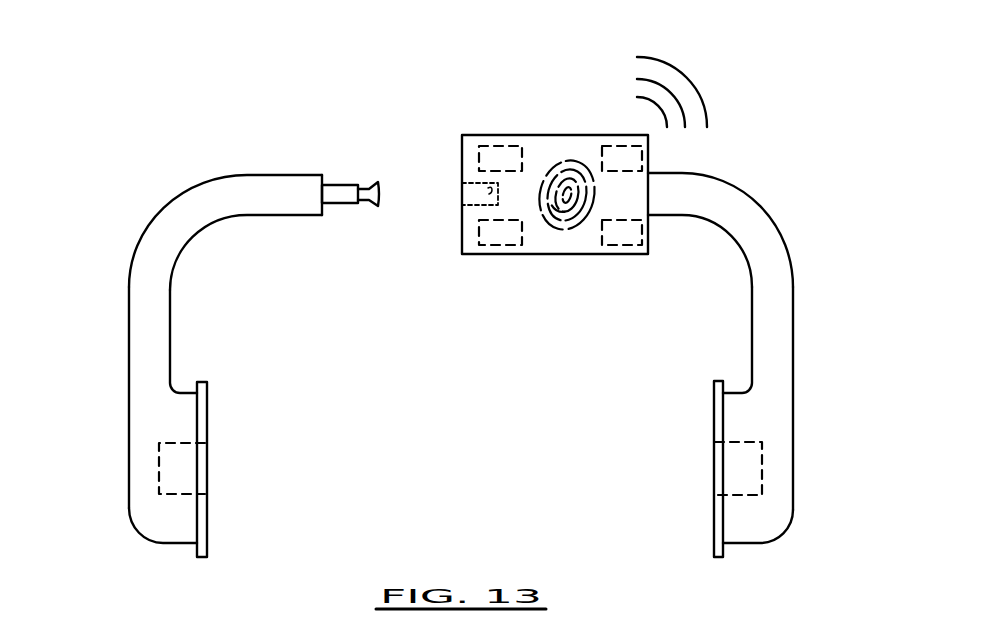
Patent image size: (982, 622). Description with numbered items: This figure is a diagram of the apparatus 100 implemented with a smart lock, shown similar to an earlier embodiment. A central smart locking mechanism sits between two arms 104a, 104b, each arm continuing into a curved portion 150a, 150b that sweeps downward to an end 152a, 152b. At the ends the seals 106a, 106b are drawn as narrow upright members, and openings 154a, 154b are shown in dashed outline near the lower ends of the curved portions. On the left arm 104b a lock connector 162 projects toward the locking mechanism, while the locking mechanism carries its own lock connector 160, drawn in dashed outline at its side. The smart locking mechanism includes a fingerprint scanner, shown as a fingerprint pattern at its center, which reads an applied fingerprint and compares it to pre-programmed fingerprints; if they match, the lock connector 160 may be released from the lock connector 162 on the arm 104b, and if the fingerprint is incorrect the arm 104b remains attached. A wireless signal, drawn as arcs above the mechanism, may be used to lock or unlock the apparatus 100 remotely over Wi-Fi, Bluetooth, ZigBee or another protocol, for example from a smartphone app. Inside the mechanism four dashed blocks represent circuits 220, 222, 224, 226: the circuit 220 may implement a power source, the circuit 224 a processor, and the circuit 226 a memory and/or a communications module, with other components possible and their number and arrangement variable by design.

The apparatus 100 is at (350, 73).
The arm 104a is at (712, 188).
The arm 104b is at (227, 188).
The seal 106a is at (720, 380).
The seal 106b is at (202, 380).
The curved portion 150a is at (770, 233).
The curved portion 150b is at (162, 225).
The end 152a is at (772, 530).
The end 152b is at (152, 527).
The opening 154a is at (745, 468).
The opening 154b is at (177, 468).
The lock connector 160 is at (462, 193).
The lock connector 162 is at (338, 182).
The circuit 220 is at (497, 247).
The circuit 222 is at (623, 247).
The circuit 224 is at (492, 146).
The circuit 226 is at (615, 145).